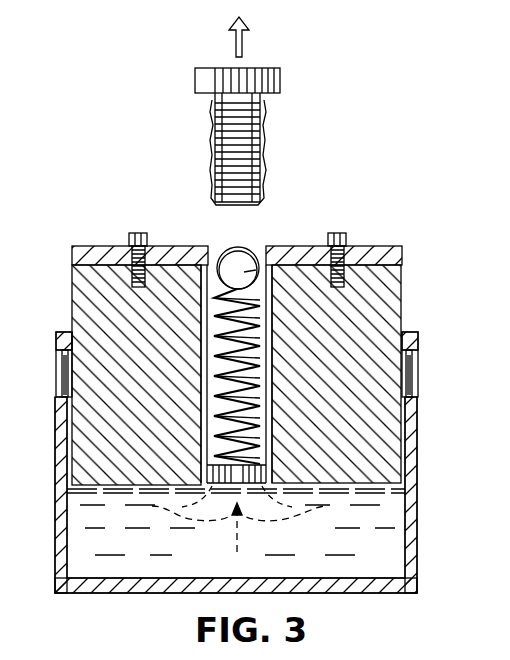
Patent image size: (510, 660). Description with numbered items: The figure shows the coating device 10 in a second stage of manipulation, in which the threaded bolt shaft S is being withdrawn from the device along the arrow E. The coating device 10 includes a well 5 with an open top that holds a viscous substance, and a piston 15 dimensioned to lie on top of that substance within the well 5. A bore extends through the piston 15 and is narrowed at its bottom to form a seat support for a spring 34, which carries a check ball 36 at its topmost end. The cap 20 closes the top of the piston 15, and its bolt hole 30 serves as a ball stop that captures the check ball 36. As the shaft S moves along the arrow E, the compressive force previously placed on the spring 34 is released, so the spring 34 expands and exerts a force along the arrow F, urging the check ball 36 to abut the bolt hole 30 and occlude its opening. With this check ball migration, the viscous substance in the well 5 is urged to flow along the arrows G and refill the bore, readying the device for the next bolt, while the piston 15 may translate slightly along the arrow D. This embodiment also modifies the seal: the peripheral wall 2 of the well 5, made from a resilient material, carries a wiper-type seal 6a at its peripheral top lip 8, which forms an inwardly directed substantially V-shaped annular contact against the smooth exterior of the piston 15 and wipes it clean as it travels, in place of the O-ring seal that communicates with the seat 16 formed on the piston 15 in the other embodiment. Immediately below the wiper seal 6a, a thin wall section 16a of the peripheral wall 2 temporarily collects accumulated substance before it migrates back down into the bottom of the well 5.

The peripheral wall 2 is at (254, 521).
The well 5 is at (107, 593).
The wiper-type seal 6a is at (403, 355).
The peripheral top lip 8 is at (62, 332).
The coating device 10 is at (360, 210).
The piston 15 is at (95, 290).
The seat 16 is at (0, 357).
The thin wall section 16a is at (403, 348).
The cap 20 is at (102, 278).
The bolt hole 30 is at (216, 258).
The spring 34 is at (190, 290).
The check ball 36 is at (268, 305).
The arrow D is at (0, 237).
The arrow E is at (232, 37).
The arrow F is at (272, 300).
The arrows G is at (200, 388).
The shaft S is at (268, 70).